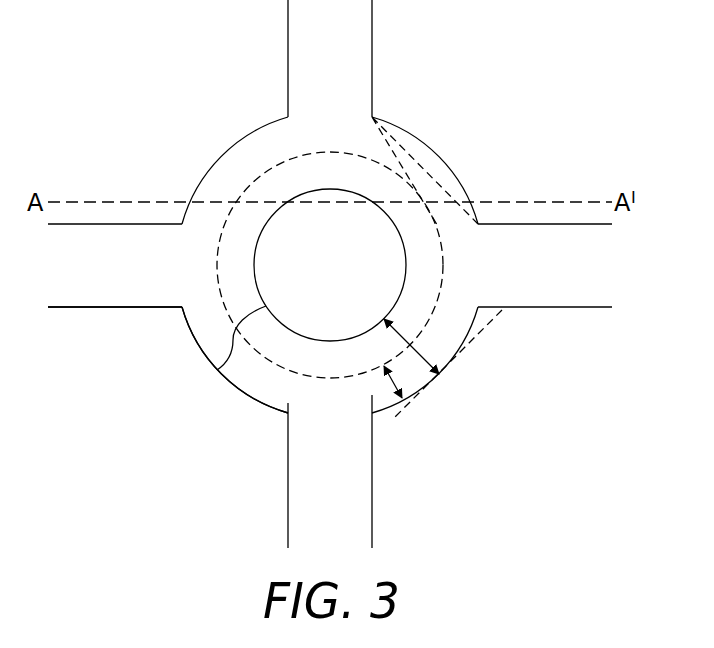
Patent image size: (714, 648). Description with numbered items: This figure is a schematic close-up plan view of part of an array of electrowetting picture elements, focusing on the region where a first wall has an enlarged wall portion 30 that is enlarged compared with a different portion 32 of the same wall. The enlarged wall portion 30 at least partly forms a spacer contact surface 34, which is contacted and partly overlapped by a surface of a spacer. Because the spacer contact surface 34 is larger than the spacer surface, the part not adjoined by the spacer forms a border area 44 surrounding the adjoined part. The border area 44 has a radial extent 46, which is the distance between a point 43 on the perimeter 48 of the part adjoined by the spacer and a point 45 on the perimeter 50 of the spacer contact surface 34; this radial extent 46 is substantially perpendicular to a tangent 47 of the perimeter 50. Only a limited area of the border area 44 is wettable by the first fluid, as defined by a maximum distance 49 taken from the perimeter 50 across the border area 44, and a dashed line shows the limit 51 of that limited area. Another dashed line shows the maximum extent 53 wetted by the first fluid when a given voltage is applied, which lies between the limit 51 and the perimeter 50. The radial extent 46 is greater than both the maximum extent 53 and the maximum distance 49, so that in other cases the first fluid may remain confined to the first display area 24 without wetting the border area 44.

The first display area 24 is at (470, 31).
The enlarged wall portion 30 is at (441, 158).
The different portion of the first wall 32 is at (555, 224).
The spacer contact surface 34 is at (373, 396).
The point on the perimeter of the part adjoined by the spacer surface 43 is at (387, 320).
The border area 44 is at (206, 312).
The point on the perimeter of the spacer contact surface 45 is at (438, 374).
The radial extent 46 is at (417, 353).
The tangent 47 is at (490, 323).
The perimeter of the part of the spacer contact surface adjoined by the spacer surfa 48 is at (218, 368).
The maximum distance 49 is at (381, 368).
The perimeter of the spacer contact surface 50 is at (263, 404).
The limit of the limited area 51 is at (333, 378).
The maximum extent 53 is at (392, 156).